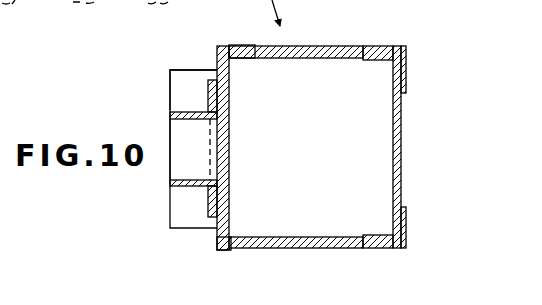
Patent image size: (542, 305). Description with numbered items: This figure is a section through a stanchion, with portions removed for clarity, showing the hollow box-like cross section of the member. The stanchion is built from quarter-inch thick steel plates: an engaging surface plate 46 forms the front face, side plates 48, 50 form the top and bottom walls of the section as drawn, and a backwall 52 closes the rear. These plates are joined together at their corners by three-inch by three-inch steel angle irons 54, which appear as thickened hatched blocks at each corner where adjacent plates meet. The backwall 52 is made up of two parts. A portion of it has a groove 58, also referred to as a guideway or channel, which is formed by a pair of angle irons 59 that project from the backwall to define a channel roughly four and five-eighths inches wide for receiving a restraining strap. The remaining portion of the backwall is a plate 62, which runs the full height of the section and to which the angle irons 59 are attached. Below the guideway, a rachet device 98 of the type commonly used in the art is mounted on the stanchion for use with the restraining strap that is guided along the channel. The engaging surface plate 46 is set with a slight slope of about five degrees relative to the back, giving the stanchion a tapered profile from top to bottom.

The engaging surface plate 46 is at (402, 147).
The side plate 48 is at (310, 36).
The side plate 50 is at (305, 253).
The backwall 52 is at (151, 176).
The angle irons 54 is at (230, 46).
The groove 58 is at (166, 130).
The angle irons 59 is at (186, 112).
The plate 62 is at (230, 150).
The rachet device 98 is at (176, 63).